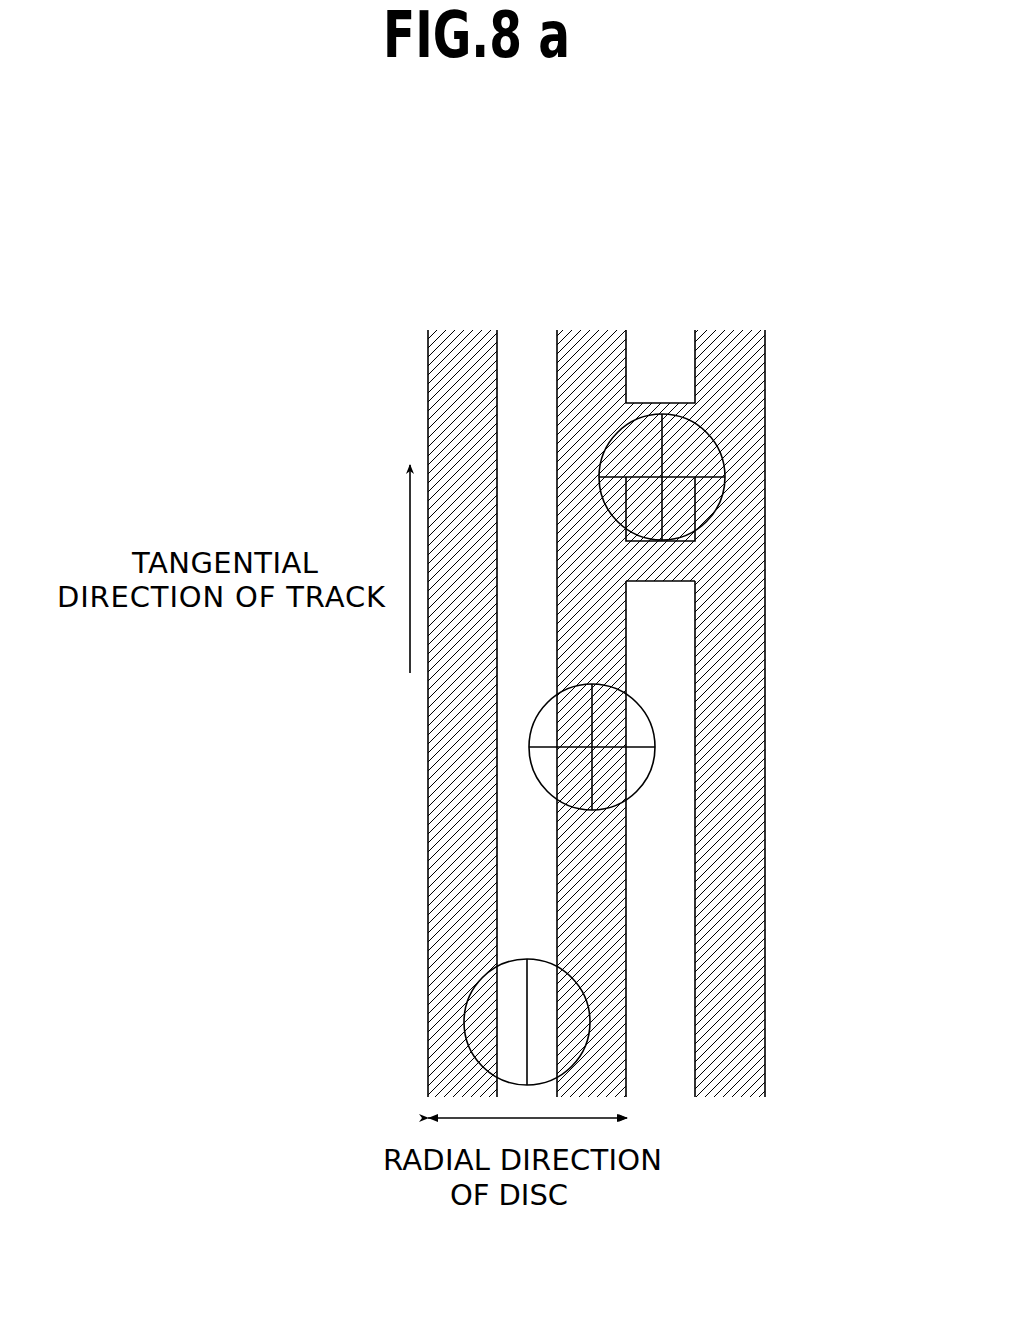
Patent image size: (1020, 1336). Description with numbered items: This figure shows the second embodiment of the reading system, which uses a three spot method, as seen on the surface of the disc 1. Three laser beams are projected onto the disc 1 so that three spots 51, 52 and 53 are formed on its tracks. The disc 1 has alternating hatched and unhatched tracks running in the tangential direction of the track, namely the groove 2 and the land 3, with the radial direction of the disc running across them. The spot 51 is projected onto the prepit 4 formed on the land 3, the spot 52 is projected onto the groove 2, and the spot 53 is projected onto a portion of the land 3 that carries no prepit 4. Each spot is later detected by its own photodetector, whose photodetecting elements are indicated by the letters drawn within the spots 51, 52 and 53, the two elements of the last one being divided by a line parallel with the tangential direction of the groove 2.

The disc 1 is at (510, 622).
The groove 2 is at (462, 347).
The land 3 is at (525, 342).
The prepit 4 is at (672, 558).
The spot 51 is at (725, 493).
The spot 52 is at (660, 748).
The spot 53 is at (488, 1008).